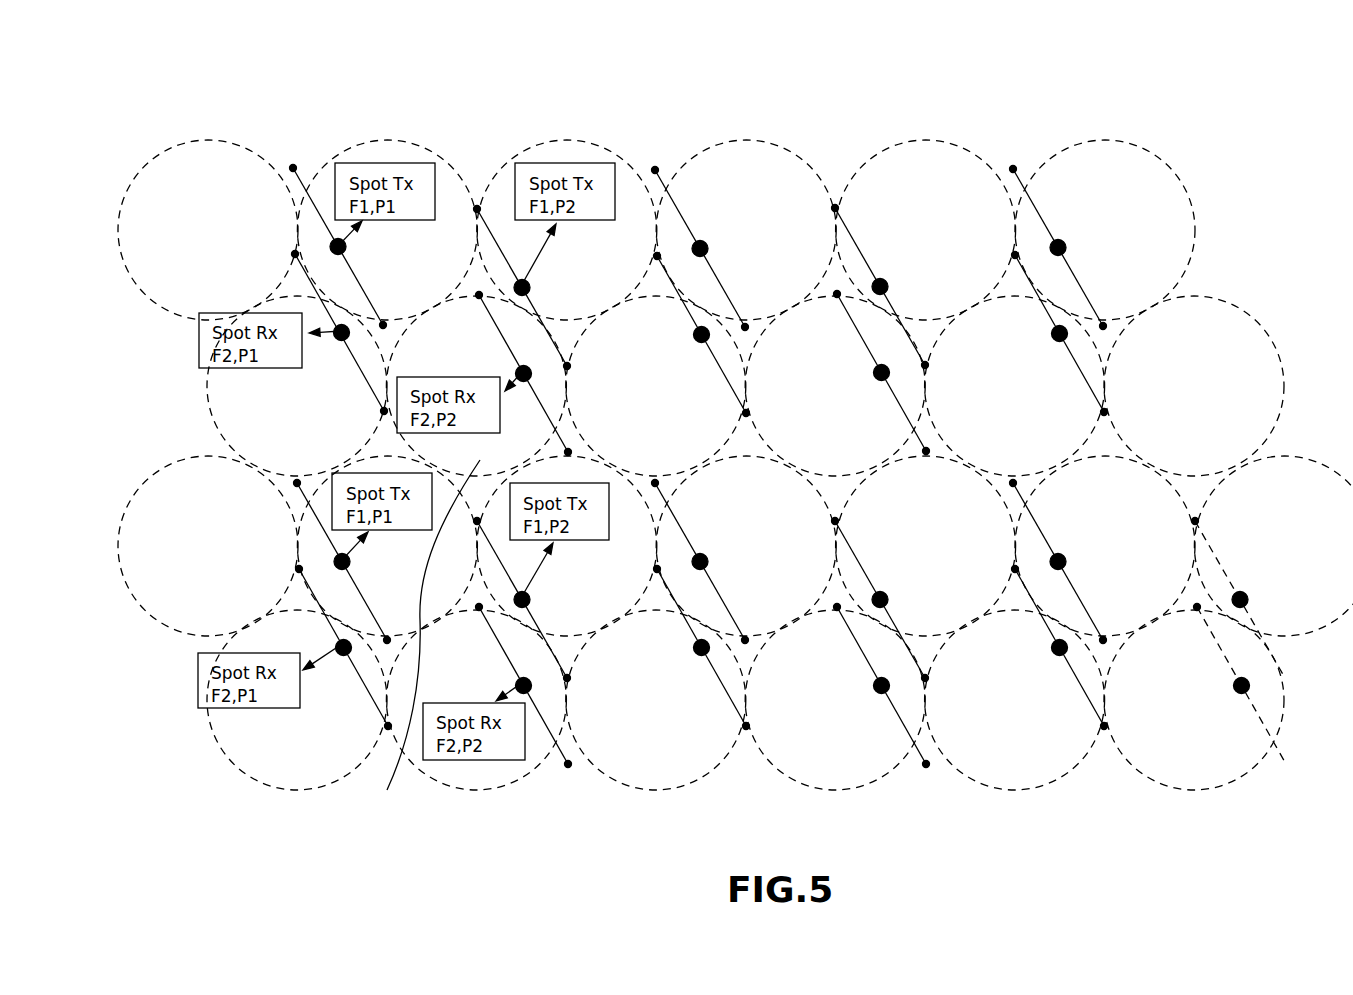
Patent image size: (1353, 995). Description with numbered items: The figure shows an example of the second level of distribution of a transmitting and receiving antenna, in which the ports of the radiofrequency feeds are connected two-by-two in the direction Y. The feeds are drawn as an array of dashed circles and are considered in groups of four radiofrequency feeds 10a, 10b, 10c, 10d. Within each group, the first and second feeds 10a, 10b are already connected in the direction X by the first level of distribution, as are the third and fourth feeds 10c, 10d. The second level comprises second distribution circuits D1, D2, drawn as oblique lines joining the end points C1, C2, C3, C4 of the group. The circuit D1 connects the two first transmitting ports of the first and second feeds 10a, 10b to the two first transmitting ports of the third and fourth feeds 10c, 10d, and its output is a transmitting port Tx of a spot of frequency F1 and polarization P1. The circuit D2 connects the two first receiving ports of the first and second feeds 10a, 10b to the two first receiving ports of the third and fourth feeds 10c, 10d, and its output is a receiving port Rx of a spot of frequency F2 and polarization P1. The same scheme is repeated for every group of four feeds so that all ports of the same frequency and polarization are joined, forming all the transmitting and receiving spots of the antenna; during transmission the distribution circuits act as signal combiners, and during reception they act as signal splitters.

The first radiofrequency feed 10a is at (215, 163).
The second radiofrequency feed 10b is at (393, 155).
The third radiofrequency feed 10c is at (240, 424).
The fourth radiofrequency feed 10d is at (417, 640).
The first corner point C1 is at (293, 167).
The second corner point C2 is at (296, 254).
The third corner point C3 is at (383, 324).
The fourth corner point C4 is at (385, 410).
The second distribution circuit D1 is at (346, 247).
The second distribution circuit D2 is at (341, 333).